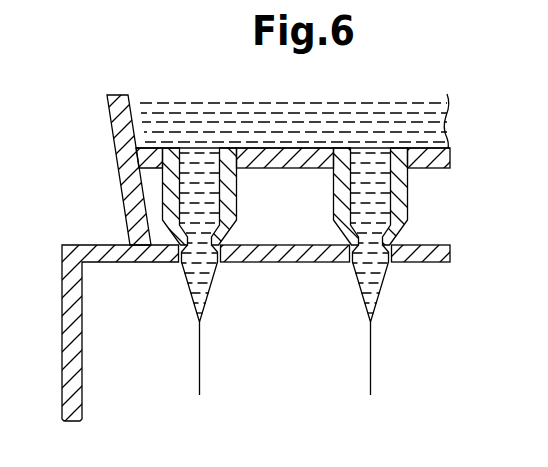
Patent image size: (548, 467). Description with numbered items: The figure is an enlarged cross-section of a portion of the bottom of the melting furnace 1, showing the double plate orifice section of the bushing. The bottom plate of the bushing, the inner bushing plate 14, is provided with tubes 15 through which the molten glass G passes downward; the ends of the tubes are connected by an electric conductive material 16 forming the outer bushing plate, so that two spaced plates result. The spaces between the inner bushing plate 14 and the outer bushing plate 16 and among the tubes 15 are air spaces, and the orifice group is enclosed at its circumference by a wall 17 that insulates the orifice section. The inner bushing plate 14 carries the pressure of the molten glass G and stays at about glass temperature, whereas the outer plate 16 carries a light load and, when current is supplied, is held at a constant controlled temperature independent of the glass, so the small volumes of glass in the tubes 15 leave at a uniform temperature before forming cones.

The melting furnace 1 is at (234, 257).
The bottom plate (inner bushing plate) 14 is at (157, 160).
The tubes 15 is at (232, 203).
The electric conductive material (outer bushing plate) 16 is at (66, 337).
The wall 17 is at (128, 214).
The molten glass G is at (296, 104).